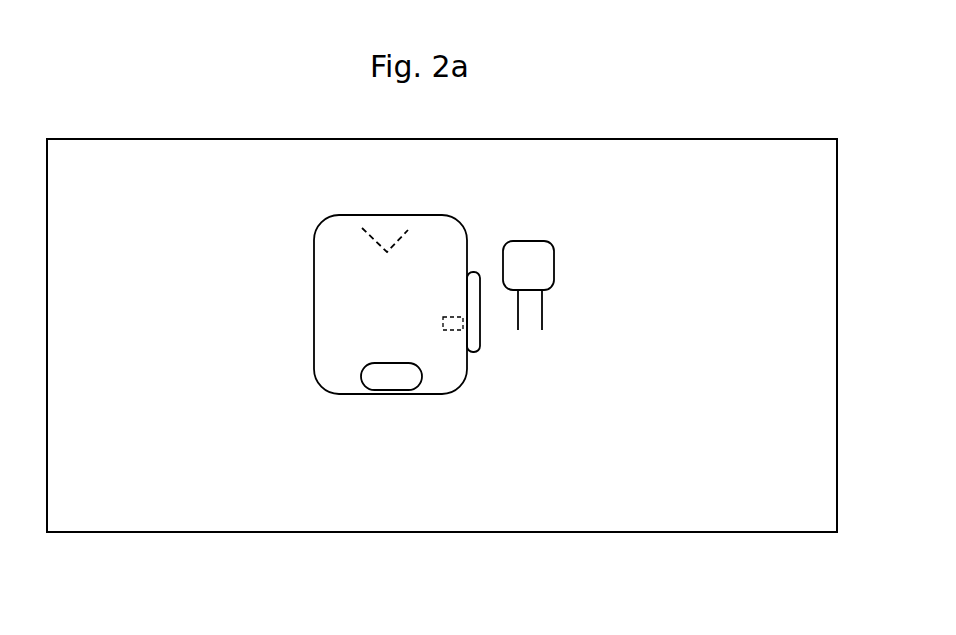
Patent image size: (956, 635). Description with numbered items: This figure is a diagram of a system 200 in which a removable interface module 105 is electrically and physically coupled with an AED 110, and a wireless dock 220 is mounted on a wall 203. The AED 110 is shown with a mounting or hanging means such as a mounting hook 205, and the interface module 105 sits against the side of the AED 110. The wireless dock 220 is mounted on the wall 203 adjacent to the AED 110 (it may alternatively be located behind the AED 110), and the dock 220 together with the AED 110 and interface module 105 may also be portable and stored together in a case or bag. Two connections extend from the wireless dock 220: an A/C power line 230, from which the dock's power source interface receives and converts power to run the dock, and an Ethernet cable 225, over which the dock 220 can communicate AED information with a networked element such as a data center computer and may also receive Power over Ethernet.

The wall 203 is at (665, 139).
The AED 110 is at (340, 215).
The mounting hook 205 is at (370, 233).
The removable interface module 105 is at (475, 272).
The wireless dock 220 is at (550, 241).
The line 230 is at (518, 320).
The Ethernet cable 225 is at (542, 320).
The system 200 is at (515, 408).